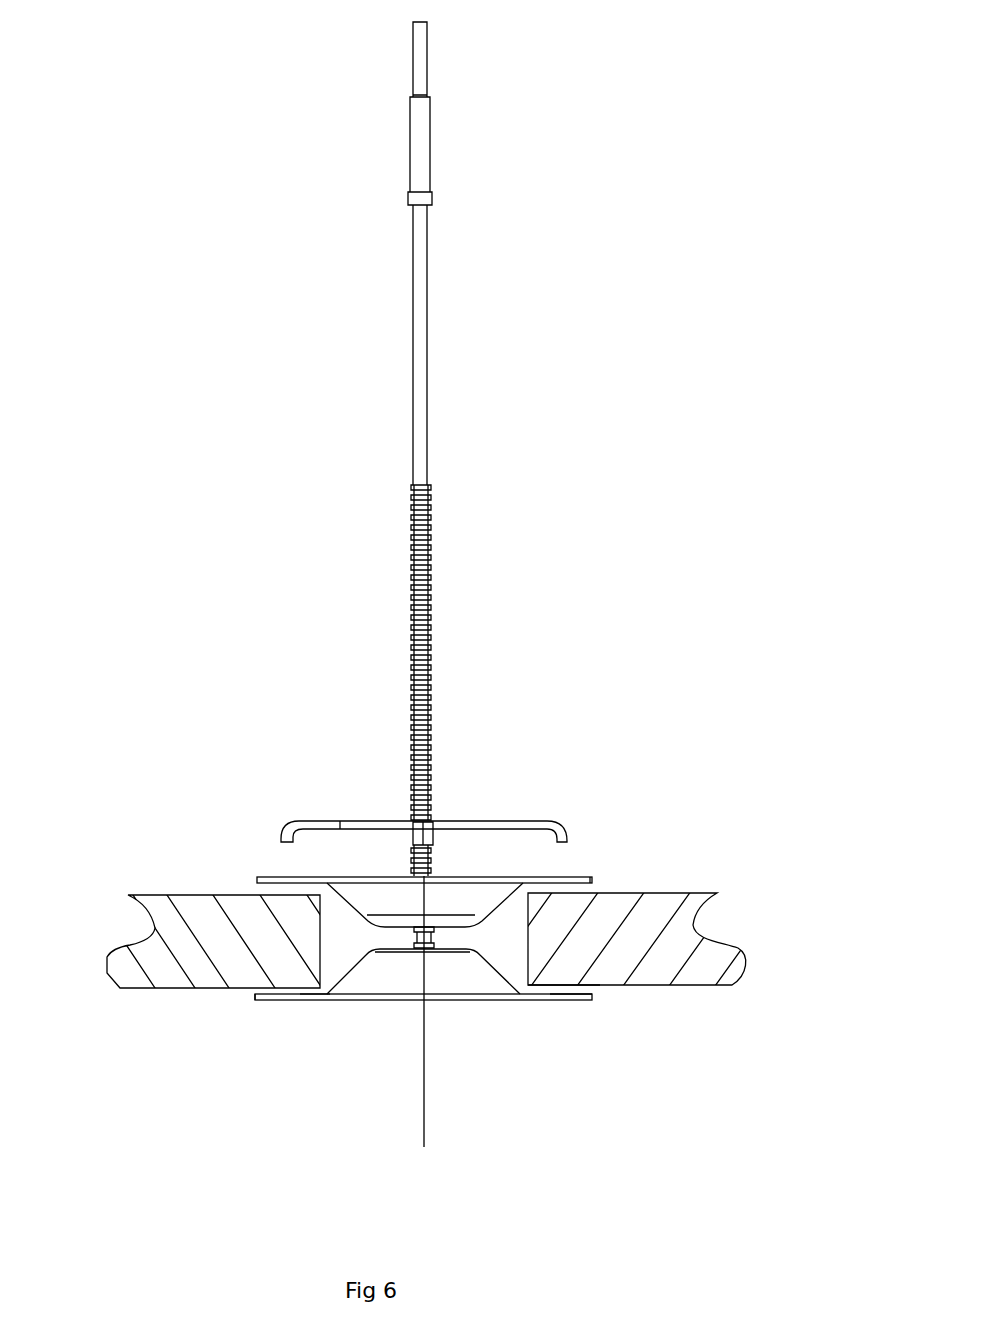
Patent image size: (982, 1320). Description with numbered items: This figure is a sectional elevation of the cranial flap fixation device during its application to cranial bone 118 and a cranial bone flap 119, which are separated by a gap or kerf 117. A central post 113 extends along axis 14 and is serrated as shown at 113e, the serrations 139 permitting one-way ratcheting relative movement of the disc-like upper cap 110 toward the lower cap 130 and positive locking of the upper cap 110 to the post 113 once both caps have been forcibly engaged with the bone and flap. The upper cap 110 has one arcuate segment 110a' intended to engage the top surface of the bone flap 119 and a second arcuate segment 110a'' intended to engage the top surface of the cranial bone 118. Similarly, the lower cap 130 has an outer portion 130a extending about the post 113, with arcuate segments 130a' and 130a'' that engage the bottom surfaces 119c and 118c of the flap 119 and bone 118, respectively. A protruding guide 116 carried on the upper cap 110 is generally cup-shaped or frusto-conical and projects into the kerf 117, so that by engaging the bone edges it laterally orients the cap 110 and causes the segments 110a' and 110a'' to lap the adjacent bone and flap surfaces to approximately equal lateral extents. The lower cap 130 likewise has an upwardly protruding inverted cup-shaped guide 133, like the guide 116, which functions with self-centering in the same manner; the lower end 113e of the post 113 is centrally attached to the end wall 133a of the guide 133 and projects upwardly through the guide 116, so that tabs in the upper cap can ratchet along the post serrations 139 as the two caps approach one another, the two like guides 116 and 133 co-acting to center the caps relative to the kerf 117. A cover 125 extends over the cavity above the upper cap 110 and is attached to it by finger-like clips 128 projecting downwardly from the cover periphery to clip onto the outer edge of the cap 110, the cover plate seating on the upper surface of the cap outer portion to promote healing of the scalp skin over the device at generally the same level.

The post 113 is at (420, 448).
The post serrations 139 is at (432, 723).
The lower end of post 113e is at (523, 1040).
The axis 14 is at (427, 1122).
The cover 125 is at (417, 960).
The finger-like clips 128 is at (282, 830).
The upper cap 110 is at (512, 843).
The arcuate segment of upper cap outer portion 110a' is at (352, 840).
The second arcuate segment of upper cap outer portion 110a'' is at (598, 866).
The protruding guide 116 is at (447, 898).
The end wall of guide 133a is at (385, 947).
The gap or kerf 117 is at (502, 942).
The inverted cup-shaped guide 133 is at (385, 977).
The lower cap 130 is at (449, 1106).
The arcuate segment of lower cap outer portion 130a' is at (356, 1093).
The outer portion of lower cap 130a is at (340, 1069).
The second arcuate segment of lower cap outer portion 130a'' is at (664, 1052).
The cranial bone flap 119 is at (257, 973).
The bottom surface of bone flap 119c is at (258, 1000).
The cranial bone 118 is at (635, 930).
The bottom surface of cranial bone 118c is at (605, 987).